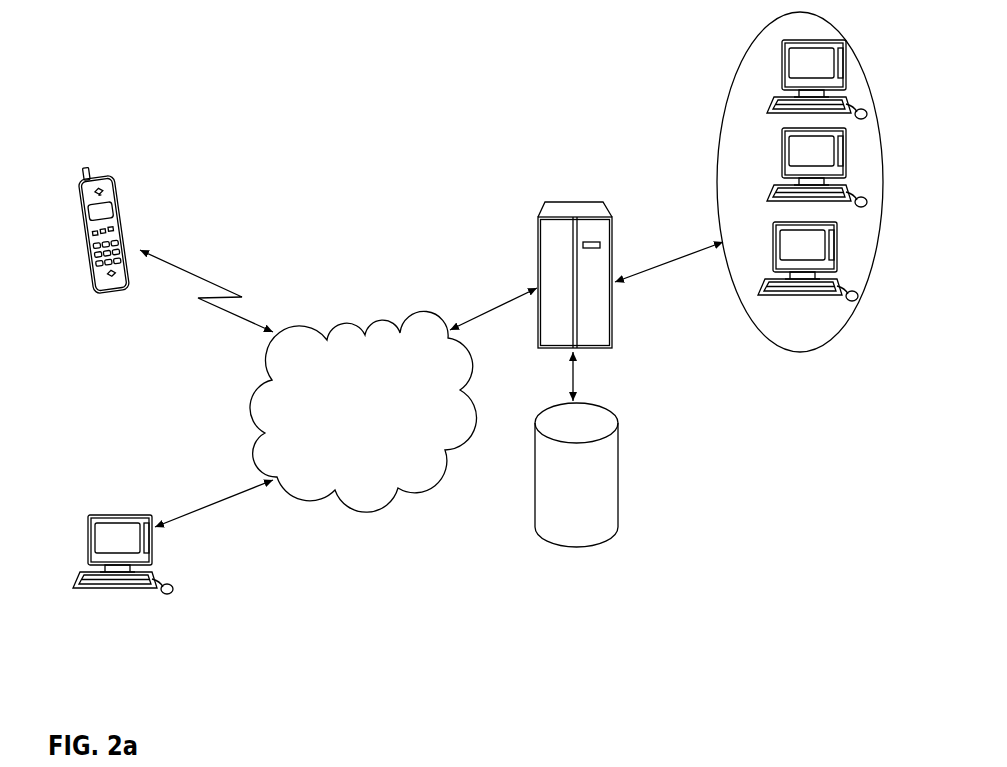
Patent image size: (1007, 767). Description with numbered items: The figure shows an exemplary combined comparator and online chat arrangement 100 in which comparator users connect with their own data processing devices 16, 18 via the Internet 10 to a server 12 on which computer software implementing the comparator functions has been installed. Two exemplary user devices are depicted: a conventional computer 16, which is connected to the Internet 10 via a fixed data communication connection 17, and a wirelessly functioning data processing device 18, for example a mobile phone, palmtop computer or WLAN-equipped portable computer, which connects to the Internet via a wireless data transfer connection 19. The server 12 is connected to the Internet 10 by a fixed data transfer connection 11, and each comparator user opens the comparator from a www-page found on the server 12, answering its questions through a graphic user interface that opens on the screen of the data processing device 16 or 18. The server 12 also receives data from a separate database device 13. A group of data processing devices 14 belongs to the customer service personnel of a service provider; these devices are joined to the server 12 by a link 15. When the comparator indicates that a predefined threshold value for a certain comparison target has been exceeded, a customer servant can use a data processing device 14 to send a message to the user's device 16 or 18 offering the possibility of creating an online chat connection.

The combined comparator and online chat arrangement 100 is at (382, 193).
The Internet 10 is at (399, 492).
The fixed data transfer connection 11 is at (493, 302).
The server 12 is at (577, 210).
The separate database device 13 is at (593, 530).
The data processing devices of customer service personnel 14 is at (727, 78).
The server-PC link 15 is at (669, 258).
The conventional computer 16 is at (108, 592).
The fixed data communication connection 17 is at (214, 502).
The wireless data processing device 18 is at (110, 290).
The wireless data transfer connection 19 is at (206, 291).